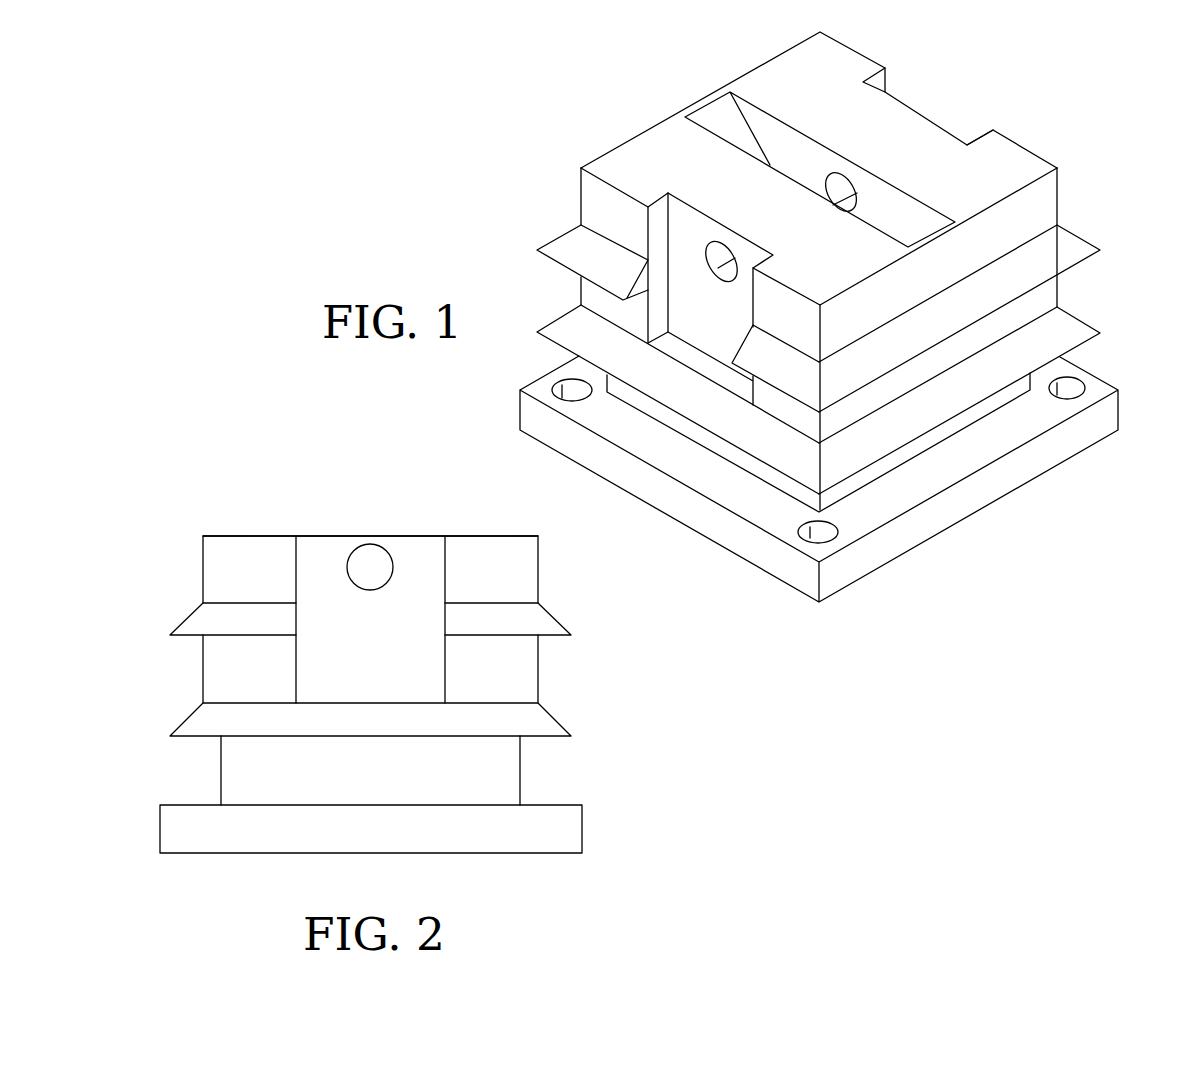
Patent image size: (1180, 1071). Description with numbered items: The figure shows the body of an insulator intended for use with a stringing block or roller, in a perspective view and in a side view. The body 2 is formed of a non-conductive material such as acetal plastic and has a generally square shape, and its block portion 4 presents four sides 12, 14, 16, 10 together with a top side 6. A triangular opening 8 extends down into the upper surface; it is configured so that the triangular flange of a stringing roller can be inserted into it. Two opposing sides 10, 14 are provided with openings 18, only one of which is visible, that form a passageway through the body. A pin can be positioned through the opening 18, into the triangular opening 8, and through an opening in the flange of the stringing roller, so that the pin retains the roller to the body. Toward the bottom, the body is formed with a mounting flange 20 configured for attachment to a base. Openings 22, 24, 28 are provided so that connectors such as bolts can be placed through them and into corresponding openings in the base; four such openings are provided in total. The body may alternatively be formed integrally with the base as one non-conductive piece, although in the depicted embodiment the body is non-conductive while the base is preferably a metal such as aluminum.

In FIG. 1, the body 2 is at (597, 106).
In FIG. 2, the body 2 is at (233, 496).
In FIG. 1, the body 4 is at (1045, 198).
In FIG. 2, the body 4 is at (370, 619).
In FIG. 1, the top side 6 is at (855, 63).
In FIG. 1, the triangular opening 8 is at (737, 127).
In FIG. 1, the side 10 is at (724, 418).
In FIG. 2, the side 10 is at (520, 678).
In FIG. 1, the side 12 is at (1072, 330).
In FIG. 2, the side 12 is at (370, 669).
In FIG. 1, the side 14 is at (918, 112).
In FIG. 1, the side 16 is at (702, 110).
In FIG. 1, the opening 18 is at (725, 280).
In FIG. 2, the opening 18 is at (383, 570).
In FIG. 1, the mounting flange 20 is at (936, 520).
In FIG. 2, the mounting flange 20 is at (371, 829).
In FIG. 1, the mounting hole 22 is at (1075, 388).
In FIG. 1, the mounting hole 24 is at (826, 530).
In FIG. 1, the mounting hole 28 is at (568, 383).